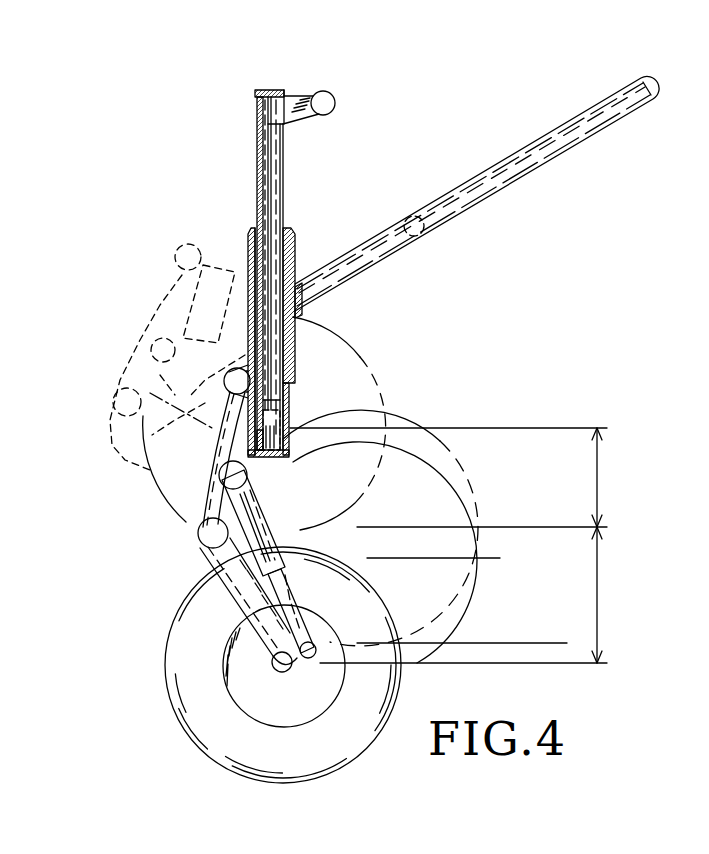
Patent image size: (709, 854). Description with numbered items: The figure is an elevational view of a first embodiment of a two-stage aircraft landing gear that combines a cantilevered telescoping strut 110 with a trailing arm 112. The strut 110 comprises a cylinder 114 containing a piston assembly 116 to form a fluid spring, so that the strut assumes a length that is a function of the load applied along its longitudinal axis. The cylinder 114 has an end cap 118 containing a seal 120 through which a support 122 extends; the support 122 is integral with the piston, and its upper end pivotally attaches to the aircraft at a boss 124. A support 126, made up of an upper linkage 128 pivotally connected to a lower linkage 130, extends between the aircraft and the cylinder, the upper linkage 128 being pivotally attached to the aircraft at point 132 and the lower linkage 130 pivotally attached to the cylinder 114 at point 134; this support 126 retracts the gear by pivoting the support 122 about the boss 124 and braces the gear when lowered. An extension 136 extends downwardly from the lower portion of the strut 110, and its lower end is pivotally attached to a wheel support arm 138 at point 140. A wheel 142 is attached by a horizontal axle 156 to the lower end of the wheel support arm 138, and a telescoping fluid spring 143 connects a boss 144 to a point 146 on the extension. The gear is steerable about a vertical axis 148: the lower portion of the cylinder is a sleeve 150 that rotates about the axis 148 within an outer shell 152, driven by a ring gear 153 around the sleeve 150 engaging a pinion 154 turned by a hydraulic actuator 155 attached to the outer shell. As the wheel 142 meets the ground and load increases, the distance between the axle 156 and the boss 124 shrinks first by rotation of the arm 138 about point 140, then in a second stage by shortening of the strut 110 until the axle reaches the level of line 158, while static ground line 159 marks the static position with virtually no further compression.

The cantilevered telescoping strut 110 is at (236, 228).
The trailing arm 112 is at (180, 548).
The cylinder 114 is at (304, 382).
The piston assembly 116 is at (292, 352).
The end cap 118 is at (300, 232).
The seal 120 is at (292, 228).
The support 122 is at (283, 160).
The boss 124 is at (326, 92).
The support 126 is at (419, 234).
The upper linkage 128 is at (492, 170).
The lower linkage 130 is at (402, 222).
The point 132 is at (645, 97).
The point 134 is at (300, 305).
The extension 136 is at (212, 488).
The wheel support arm 138 is at (222, 592).
The point 140 is at (211, 530).
The wheel 142 is at (368, 753).
The telescoping fluid spring 143 is at (294, 567).
The boss 144 is at (314, 646).
The point 146 is at (248, 480).
The vertical axis 148 is at (262, 137).
The sleeve 150 is at (290, 456).
The outer shell 152 is at (292, 363).
The ring gear 153 is at (290, 382).
The pinion 154 is at (233, 425).
The hydraulic actuator 155 is at (228, 398).
The axle 156 is at (284, 670).
The line 158 is at (488, 428).
The static ground line 159 is at (474, 643).